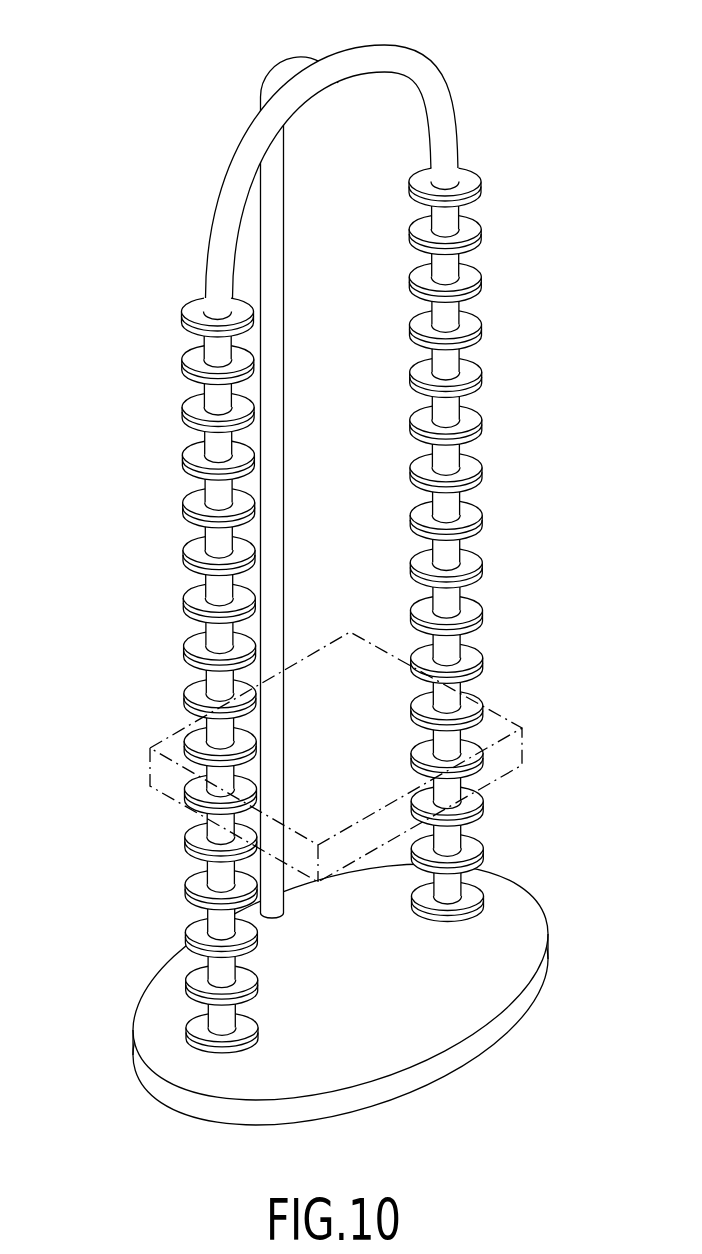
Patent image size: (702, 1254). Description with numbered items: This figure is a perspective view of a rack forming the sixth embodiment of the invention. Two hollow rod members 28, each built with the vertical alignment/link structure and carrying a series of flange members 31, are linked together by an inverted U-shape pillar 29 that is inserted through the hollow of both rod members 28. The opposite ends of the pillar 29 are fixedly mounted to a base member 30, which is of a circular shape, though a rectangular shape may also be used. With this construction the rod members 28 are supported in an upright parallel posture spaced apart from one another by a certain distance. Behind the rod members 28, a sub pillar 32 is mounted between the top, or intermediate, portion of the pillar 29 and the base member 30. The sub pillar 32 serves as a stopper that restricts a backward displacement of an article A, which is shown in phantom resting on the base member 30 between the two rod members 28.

The rod member 28 is at (168, 496).
The inverted U-shape pillar 29 is at (413, 63).
The base member 30 is at (463, 1003).
The flange member 31 is at (478, 290).
The sub pillar 32 is at (273, 238).
The article A is at (522, 756).